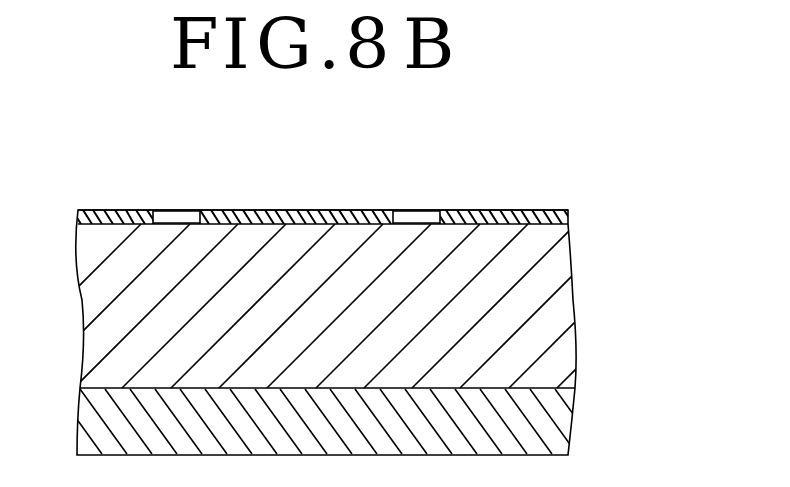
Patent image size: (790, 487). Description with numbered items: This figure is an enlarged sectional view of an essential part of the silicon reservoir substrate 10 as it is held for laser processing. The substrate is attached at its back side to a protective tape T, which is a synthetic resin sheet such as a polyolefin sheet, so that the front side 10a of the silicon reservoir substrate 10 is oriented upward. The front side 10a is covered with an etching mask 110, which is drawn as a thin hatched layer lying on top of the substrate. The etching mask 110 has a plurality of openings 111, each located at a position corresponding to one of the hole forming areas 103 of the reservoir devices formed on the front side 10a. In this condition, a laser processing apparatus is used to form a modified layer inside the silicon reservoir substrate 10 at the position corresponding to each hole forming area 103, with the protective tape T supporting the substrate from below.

The silicon reservoir substrate 10 is at (585, 295).
The front side 10a is at (105, 211).
The hole forming area 103 is at (164, 212).
The etching mask 110 is at (512, 210).
The opening 111 is at (183, 215).
The protective tape T is at (547, 423).